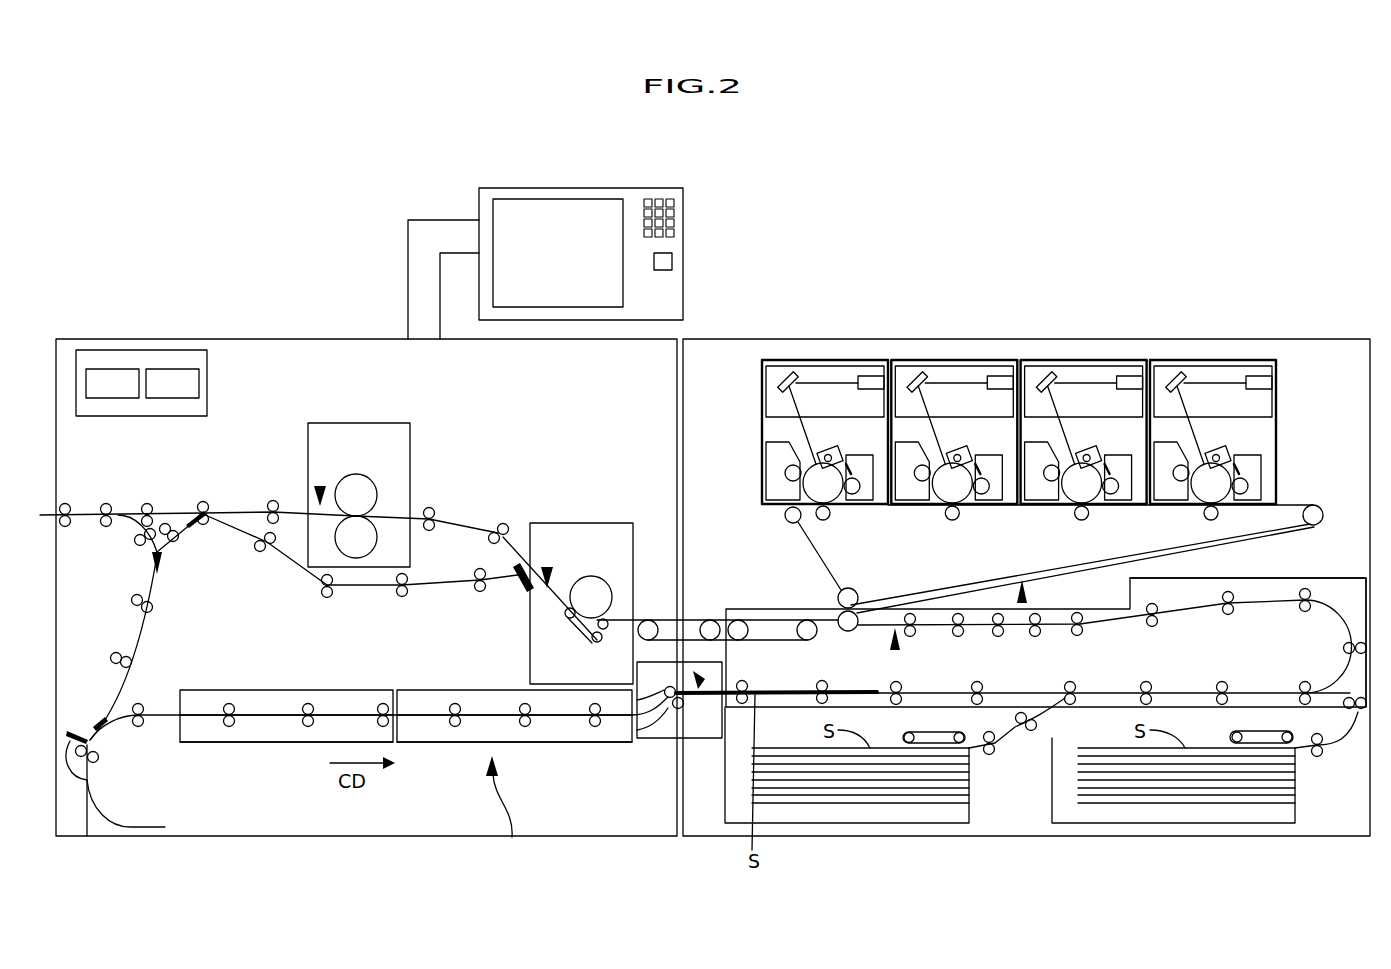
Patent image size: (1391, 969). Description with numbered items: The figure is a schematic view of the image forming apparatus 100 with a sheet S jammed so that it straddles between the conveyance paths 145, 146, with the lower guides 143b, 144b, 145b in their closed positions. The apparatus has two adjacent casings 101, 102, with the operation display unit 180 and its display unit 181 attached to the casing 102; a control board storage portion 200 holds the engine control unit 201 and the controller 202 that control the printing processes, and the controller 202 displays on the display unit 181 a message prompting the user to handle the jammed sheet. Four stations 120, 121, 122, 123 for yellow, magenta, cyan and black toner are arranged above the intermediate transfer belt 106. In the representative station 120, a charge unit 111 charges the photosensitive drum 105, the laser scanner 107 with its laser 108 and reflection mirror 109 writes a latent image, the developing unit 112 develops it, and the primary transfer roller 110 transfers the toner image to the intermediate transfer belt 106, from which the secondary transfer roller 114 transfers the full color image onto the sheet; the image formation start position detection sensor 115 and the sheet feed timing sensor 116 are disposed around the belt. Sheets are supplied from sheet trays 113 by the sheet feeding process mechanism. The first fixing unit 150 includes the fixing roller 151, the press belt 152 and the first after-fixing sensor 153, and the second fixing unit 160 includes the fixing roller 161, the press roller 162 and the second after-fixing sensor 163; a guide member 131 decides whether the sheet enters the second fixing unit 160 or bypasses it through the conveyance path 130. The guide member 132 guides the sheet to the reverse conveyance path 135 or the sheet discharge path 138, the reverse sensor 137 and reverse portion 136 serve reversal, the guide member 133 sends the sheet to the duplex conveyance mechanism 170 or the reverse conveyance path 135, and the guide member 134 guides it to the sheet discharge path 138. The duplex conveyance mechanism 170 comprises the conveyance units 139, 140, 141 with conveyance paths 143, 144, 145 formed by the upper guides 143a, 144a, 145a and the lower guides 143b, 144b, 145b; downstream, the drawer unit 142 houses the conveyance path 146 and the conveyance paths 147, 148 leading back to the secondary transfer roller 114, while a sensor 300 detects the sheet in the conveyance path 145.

The image forming apparatus 100 is at (890, 209).
The casing 101 is at (1338, 339).
The casing 102 is at (229, 338).
The photosensitive drum 105 is at (834, 500).
The intermediate transfer belt 106 is at (1293, 503).
The laser scanner 107 is at (813, 386).
The laser 108 is at (871, 390).
The reflection mirror 109 is at (786, 378).
The primary transfer roller 110 is at (826, 521).
The charge unit 111 is at (833, 452).
The developing unit 112 is at (788, 508).
The sheet tray 113 is at (971, 772).
The secondary transfer roller 114 is at (850, 632).
The image formation start position detection sensor 115 is at (1027, 598).
The sheet feed timing sensor 116 is at (897, 648).
The station 120 is at (815, 409).
The station 121 is at (945, 360).
The station 122 is at (1075, 360).
The station 123 is at (1200, 360).
The conveyance path 130 is at (358, 592).
The guide member 131 is at (518, 592).
The guide member 132 is at (190, 508).
The guide member 133 is at (97, 715).
The guide member 134 is at (158, 561).
The reverse conveyance path 135 is at (148, 608).
The reverse portion 136 is at (88, 838).
The reverse sensor 137 is at (84, 778).
The sheet discharge path 138 is at (90, 510).
The conveyance unit 139 is at (241, 709).
The conveyance unit 140 is at (509, 720).
The conveyance unit 141 is at (666, 633).
The drawer unit 142 is at (742, 608).
The conveyance path 143 is at (241, 722).
The upper guide 143a is at (300, 690).
The lower guide 143b is at (270, 742).
The conveyance path 144 is at (509, 733).
The upper guide 144a is at (417, 705).
The lower guide 144b is at (445, 735).
The conveyance path 145 is at (630, 744).
The upper guide 145a is at (647, 693).
The lower guide 145b is at (640, 733).
The conveyance path 146 is at (784, 690).
The conveyance path 147 is at (1102, 690).
The conveyance path 148 is at (1333, 603).
The first fixing unit 150 is at (575, 582).
The fixing roller 151 is at (592, 576).
The press belt 152 is at (578, 622).
The first after-fixing sensor 153 is at (547, 565).
The second fixing unit 160 is at (355, 481).
The fixing roller 161 is at (355, 474).
The press roller 162 is at (378, 541).
The second after-fixing sensor 163 is at (318, 481).
The duplex conveyance mechanism 170 is at (495, 813).
The operation display unit 180 is at (561, 263).
The display unit 181 is at (612, 257).
The controller 200 is at (145, 348).
The engine control unit 201 is at (128, 369).
The controller 202 is at (177, 369).
The sensor 300 is at (702, 690).